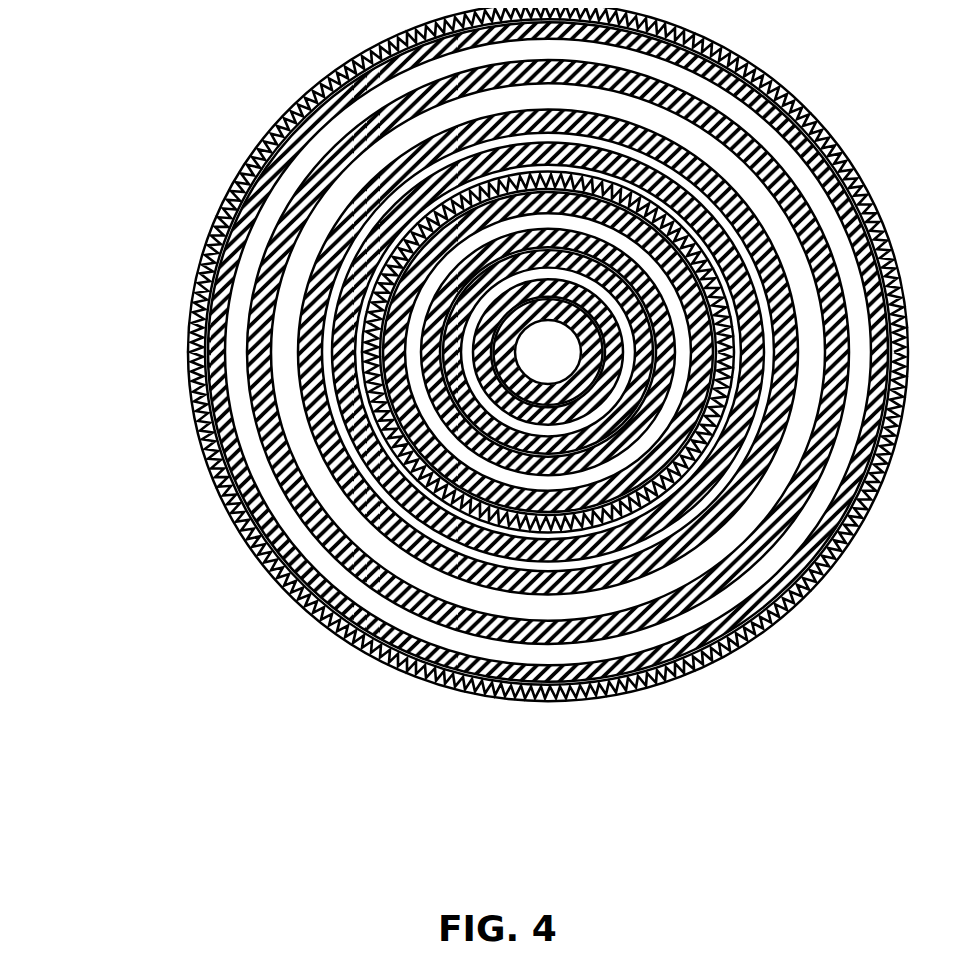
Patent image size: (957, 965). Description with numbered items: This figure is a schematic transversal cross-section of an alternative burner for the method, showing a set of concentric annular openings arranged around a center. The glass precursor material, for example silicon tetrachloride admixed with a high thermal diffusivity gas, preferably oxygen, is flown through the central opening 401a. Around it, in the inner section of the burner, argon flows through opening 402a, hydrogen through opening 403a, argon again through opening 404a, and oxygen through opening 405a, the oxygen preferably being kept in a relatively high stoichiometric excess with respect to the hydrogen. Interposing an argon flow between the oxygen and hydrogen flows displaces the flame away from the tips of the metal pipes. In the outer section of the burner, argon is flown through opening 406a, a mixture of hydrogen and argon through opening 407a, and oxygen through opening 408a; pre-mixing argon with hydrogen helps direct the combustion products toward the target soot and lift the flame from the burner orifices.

The central opening 401a is at (551, 364).
The opening 402a is at (480, 398).
The opening 403a is at (420, 370).
The opening 404a is at (403, 370).
The opening 405a is at (403, 347).
The opening 406a is at (320, 312).
The opening 407a is at (313, 222).
The opening 408a is at (320, 130).